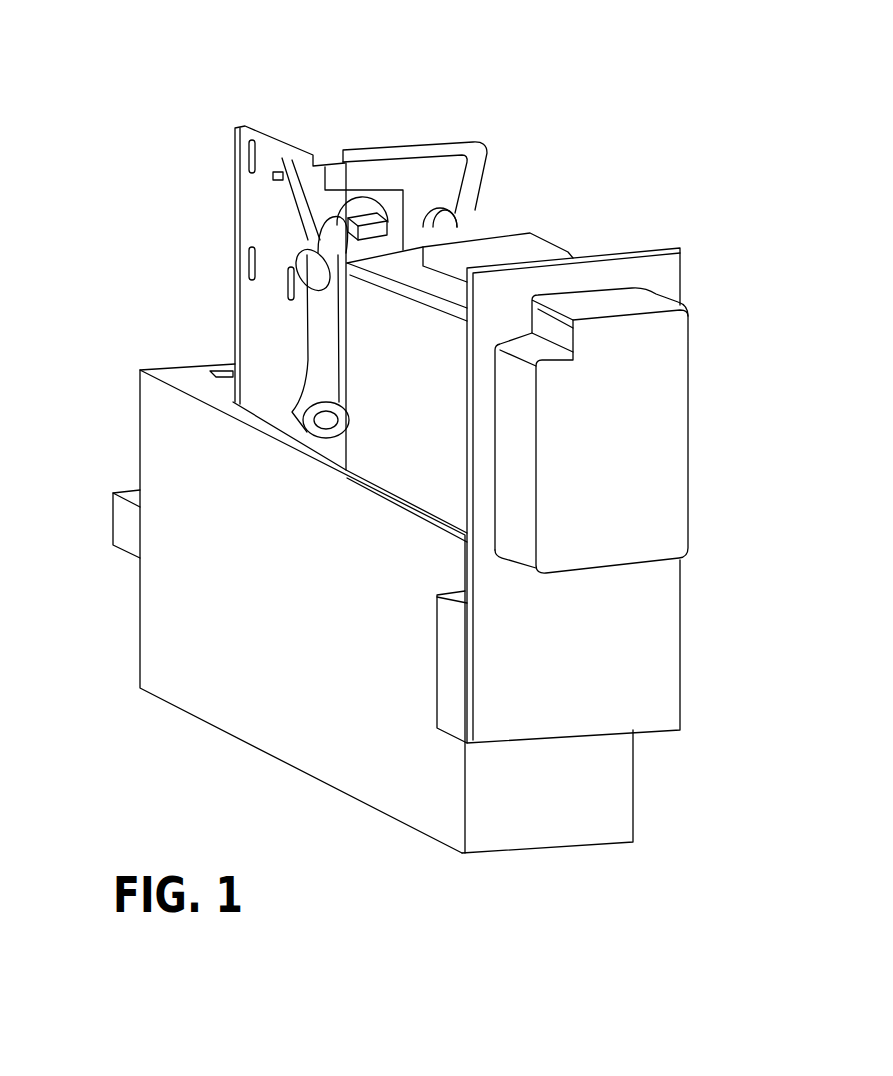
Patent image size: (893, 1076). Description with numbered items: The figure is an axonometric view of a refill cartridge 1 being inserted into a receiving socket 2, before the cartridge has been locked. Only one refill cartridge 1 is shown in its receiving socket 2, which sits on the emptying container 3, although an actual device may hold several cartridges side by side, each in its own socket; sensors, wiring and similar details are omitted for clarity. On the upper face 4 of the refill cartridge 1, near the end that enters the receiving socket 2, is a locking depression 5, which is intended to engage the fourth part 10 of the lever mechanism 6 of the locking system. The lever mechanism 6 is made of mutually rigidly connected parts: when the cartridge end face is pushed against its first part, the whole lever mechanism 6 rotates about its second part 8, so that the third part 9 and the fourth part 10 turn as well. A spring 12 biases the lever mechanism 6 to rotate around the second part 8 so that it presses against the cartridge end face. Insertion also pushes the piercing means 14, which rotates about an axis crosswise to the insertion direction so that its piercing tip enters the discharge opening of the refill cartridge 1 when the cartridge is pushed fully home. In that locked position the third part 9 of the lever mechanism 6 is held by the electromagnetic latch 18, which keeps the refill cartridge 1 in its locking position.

The refill cartridge 1 is at (655, 445).
The receiving socket 2 is at (633, 622).
The emptying container 3 is at (295, 540).
The upper face 4 is at (543, 238).
The locking depression 5 is at (421, 242).
The lever mechanism 6 is at (470, 213).
The second part 8 is at (305, 222).
The third part 9 is at (310, 275).
The fourth part 10 is at (387, 155).
The spring 12 is at (293, 212).
The piercing means 14 is at (305, 413).
The electromagnetic latch 18 is at (363, 250).